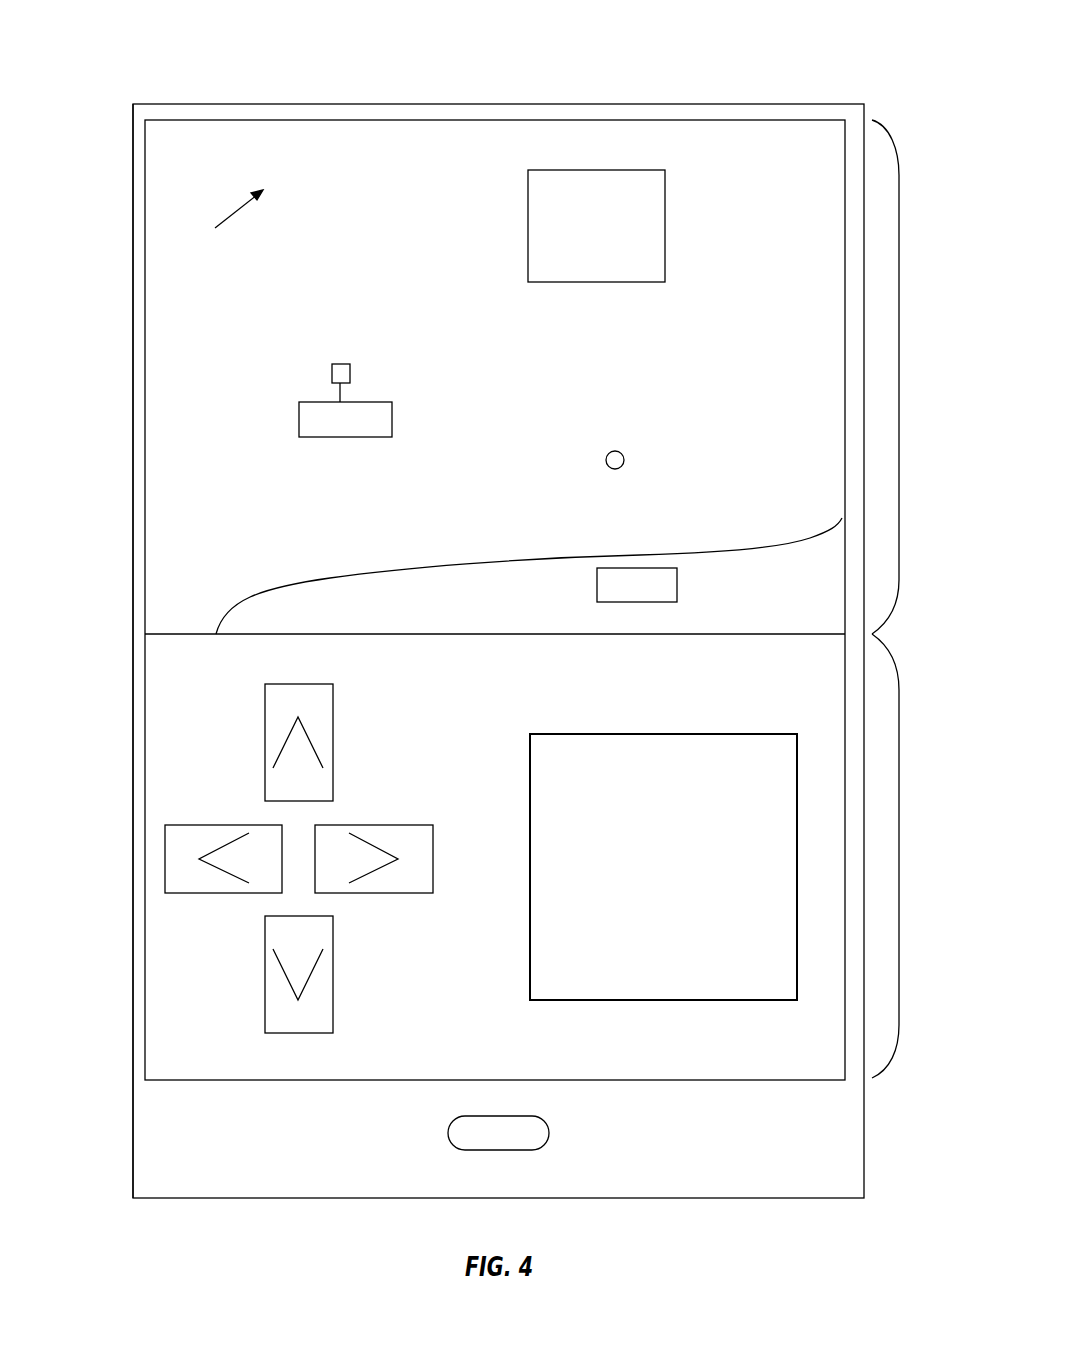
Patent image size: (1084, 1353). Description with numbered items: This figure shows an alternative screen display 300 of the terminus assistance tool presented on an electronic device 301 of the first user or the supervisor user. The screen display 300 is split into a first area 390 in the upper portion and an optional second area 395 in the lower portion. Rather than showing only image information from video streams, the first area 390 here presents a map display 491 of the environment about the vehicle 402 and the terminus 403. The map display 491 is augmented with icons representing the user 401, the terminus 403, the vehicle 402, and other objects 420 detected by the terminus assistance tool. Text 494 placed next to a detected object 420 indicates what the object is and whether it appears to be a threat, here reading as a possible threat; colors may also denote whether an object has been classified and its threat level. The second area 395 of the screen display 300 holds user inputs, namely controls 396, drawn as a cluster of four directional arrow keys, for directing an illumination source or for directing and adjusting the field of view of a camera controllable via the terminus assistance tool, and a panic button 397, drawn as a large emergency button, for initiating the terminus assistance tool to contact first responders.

The screen display 300 is at (253, 119).
The electronic device 301 is at (131, 207).
The map display 491 is at (655, 123).
The first area 390 is at (899, 378).
The second area 395 is at (899, 857).
The terminus 403 is at (665, 228).
The other objects 420 is at (345, 364).
The text 494 is at (327, 437).
The user 401 is at (622, 453).
The vehicle 402 is at (677, 590).
The controls 396 is at (212, 795).
The panic button 397 is at (563, 734).